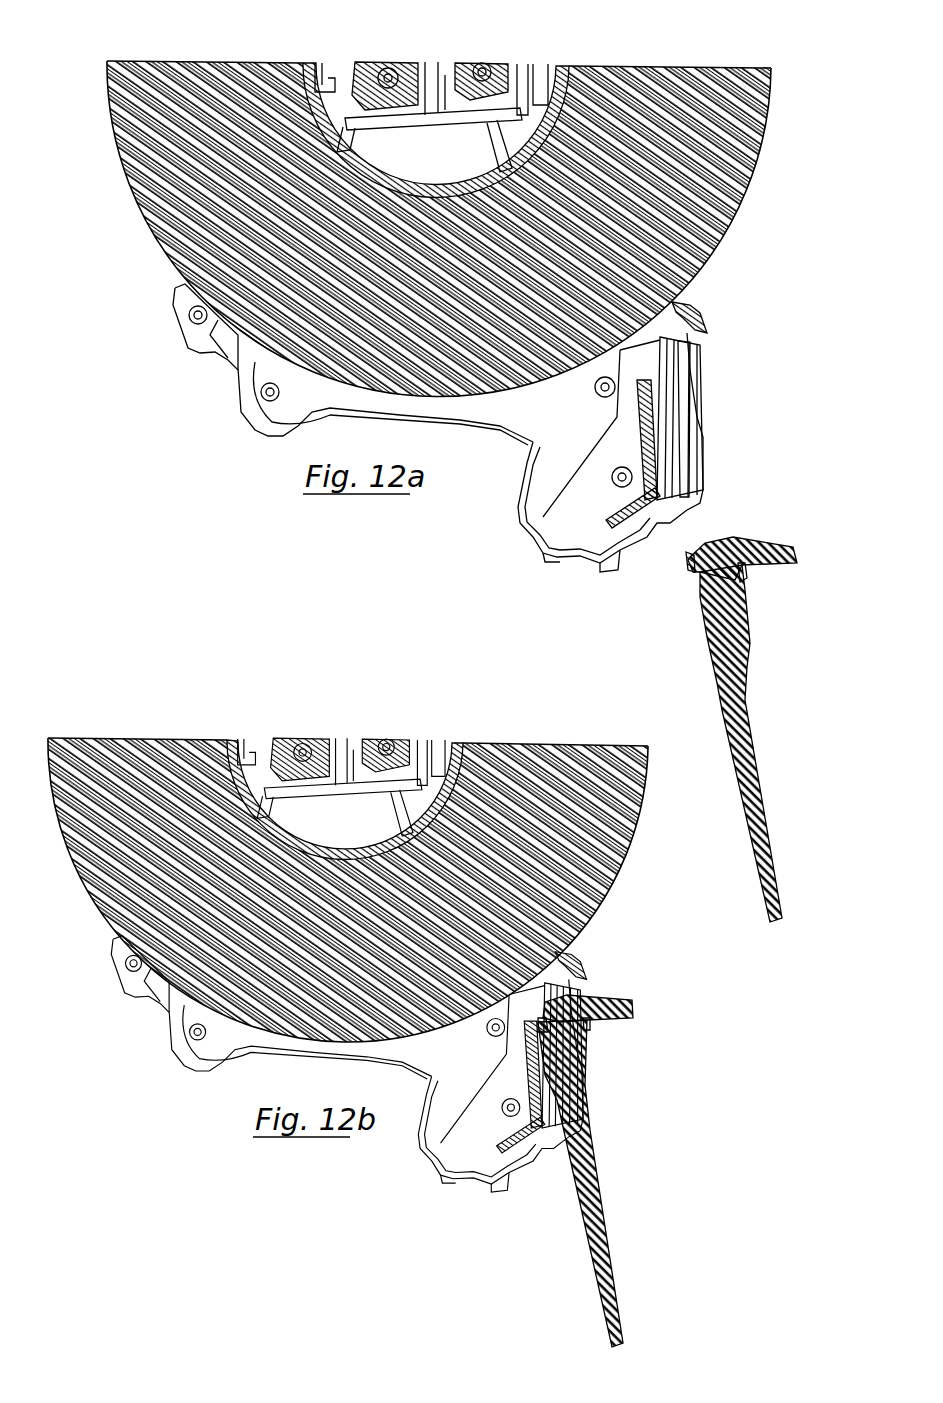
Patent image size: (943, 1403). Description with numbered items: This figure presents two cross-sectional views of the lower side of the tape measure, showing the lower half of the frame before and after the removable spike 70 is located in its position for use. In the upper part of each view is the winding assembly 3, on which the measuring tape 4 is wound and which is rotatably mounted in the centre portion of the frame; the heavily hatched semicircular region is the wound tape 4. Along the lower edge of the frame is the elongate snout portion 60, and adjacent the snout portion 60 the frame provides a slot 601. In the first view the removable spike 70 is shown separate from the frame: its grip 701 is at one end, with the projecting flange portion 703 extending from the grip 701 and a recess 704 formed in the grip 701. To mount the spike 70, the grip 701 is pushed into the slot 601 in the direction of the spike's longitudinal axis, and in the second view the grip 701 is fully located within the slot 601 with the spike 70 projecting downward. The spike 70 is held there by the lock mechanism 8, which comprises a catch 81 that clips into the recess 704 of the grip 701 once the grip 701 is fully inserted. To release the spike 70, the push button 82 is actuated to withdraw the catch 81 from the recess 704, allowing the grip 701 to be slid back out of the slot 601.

In FIG. 12A, the winding assembly 3 is at (548, 68).
In FIG. 12B, the winding assembly 3 is at (443, 742).
In FIG. 12A, the measuring tape 4 is at (712, 185).
In FIG. 12B, the measuring tape 4 is at (590, 860).
In FIG. 12A, the lock mechanism 8 is at (647, 433).
In FIG. 12A, the snout portion 60 is at (575, 519).
In FIG. 12B, the snout portion 60 is at (476, 1161).
In FIG. 12A, the removable spike 70 is at (736, 709).
In FIG. 12B, the removable spike 70 is at (625, 1162).
In FIG. 12A, the catch 81 is at (702, 386).
In FIG. 12B, the catch 81 is at (585, 1083).
In FIG. 12A, the push button 82 is at (705, 320).
In FIG. 12B, the push button 82 is at (590, 975).
In FIG. 12A, the slot 601 is at (686, 440).
In FIG. 12A, the grip 701 is at (746, 570).
In FIG. 12B, the grip 701 is at (620, 1020).
In FIG. 12A, the projecting flange portion 703 is at (760, 545).
In FIG. 12B, the projecting flange portion 703 is at (612, 1003).
In FIG. 12A, the recess 704 is at (690, 575).
In FIG. 12B, the recess 704 is at (578, 1040).